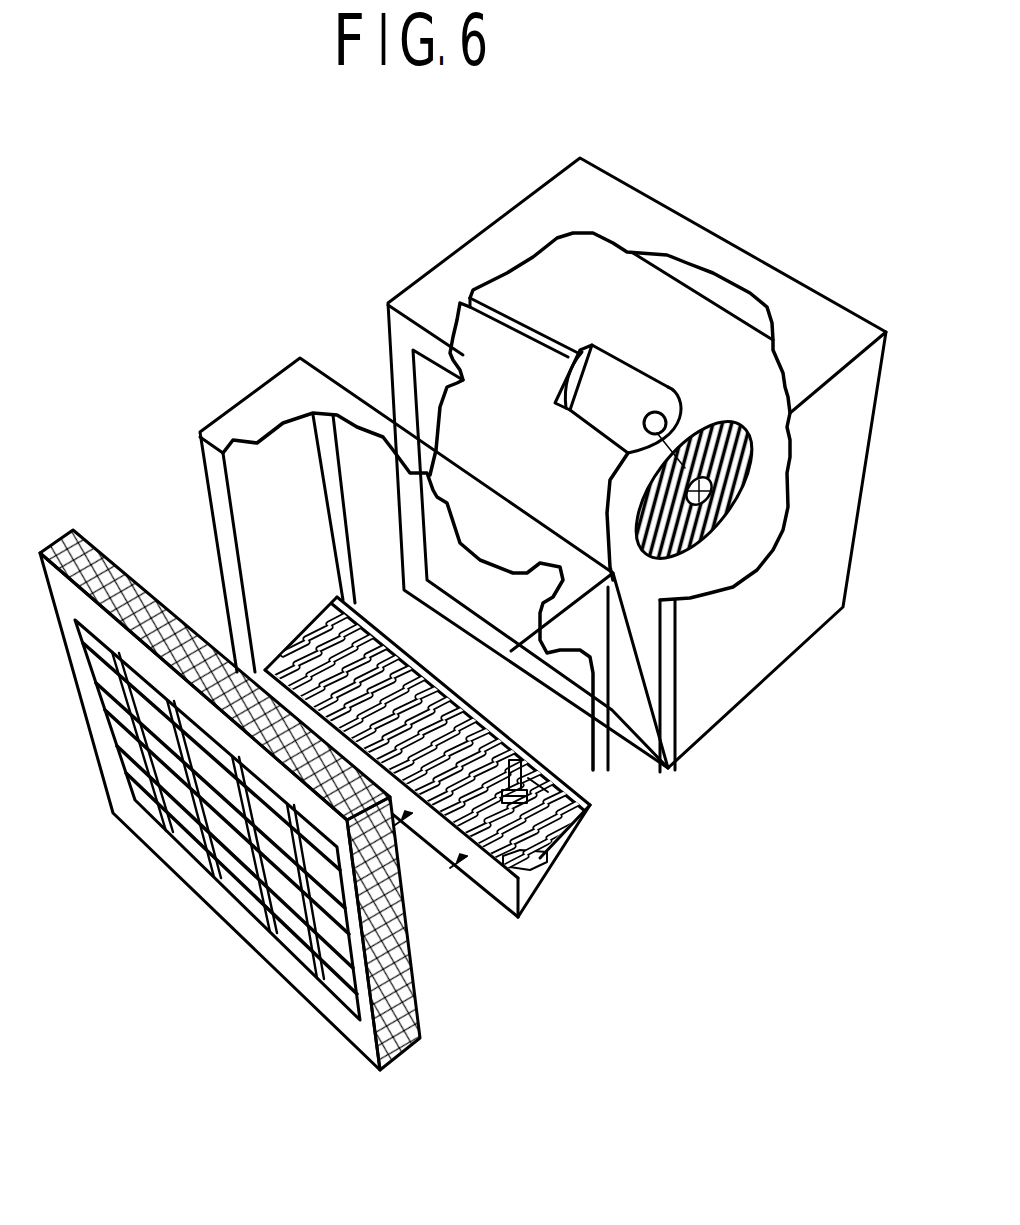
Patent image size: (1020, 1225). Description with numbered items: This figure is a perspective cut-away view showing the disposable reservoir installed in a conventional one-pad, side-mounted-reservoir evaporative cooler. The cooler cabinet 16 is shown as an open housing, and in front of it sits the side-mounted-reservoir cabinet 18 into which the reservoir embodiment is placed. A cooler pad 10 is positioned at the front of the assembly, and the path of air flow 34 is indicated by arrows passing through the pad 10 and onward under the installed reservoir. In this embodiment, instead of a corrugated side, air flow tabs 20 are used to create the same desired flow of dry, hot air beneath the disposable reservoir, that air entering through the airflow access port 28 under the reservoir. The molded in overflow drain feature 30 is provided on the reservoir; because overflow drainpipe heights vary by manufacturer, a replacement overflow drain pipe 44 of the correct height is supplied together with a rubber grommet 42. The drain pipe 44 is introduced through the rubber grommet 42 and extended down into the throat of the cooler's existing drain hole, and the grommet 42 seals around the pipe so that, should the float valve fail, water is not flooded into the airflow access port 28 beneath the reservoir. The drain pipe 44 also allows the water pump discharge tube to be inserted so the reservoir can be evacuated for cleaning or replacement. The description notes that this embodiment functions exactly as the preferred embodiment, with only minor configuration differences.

The cooler pad 10 is at (387, 977).
The cooler cabinet 16 is at (585, 200).
The side-mounted-reservoir cabinet 18 is at (285, 400).
The air flow tabs 20 is at (530, 757).
The airflow access port 28 is at (345, 607).
The molded in overflow drain feature 30 is at (530, 784).
The path of air flow 34 is at (394, 638).
The rubber grommet 42 is at (525, 772).
The overflow drain pipe 44 is at (545, 805).